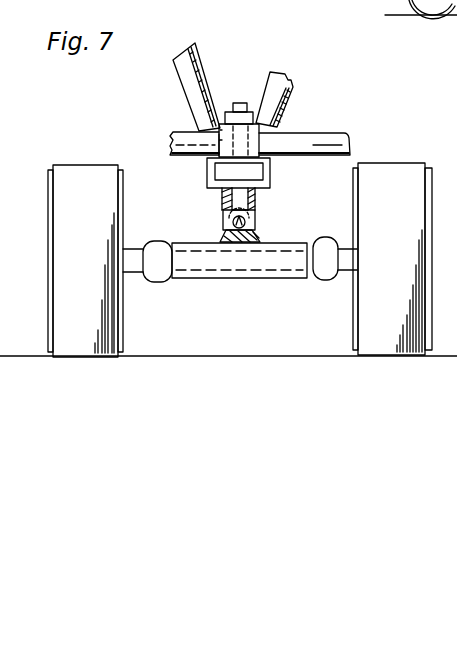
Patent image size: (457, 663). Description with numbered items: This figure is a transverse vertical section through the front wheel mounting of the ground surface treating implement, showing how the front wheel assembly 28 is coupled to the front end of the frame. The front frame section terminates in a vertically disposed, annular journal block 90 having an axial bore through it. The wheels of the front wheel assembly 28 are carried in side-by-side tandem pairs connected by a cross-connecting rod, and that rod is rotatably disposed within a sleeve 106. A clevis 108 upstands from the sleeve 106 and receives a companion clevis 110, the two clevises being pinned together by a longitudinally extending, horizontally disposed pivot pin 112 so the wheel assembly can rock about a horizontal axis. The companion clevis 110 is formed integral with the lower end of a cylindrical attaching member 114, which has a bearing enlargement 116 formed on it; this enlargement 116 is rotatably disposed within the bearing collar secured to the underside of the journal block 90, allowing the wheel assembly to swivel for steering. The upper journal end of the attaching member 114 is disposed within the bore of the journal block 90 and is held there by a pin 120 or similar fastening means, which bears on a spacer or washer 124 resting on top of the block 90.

The front wheel assembly 28 is at (405, 163).
The journal block 90 is at (281, 120).
The sleeve 106 is at (305, 244).
The clevis 108 is at (240, 103).
The companion clevis 110 is at (254, 220).
The pivot pin 112 is at (225, 223).
The cylindrical attaching member 114 is at (271, 184).
The bearing enlargement 116 is at (270, 156).
The pin 120 is at (255, 118).
The spacer or washer 124 is at (289, 92).